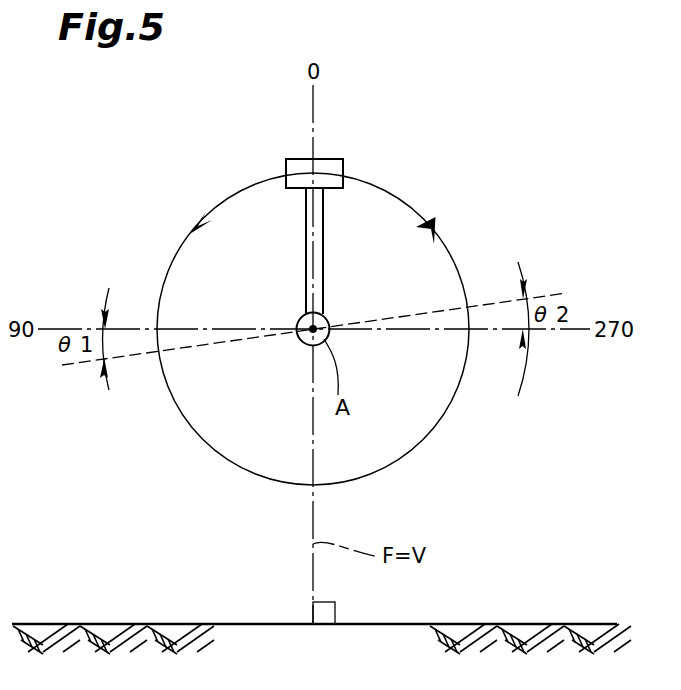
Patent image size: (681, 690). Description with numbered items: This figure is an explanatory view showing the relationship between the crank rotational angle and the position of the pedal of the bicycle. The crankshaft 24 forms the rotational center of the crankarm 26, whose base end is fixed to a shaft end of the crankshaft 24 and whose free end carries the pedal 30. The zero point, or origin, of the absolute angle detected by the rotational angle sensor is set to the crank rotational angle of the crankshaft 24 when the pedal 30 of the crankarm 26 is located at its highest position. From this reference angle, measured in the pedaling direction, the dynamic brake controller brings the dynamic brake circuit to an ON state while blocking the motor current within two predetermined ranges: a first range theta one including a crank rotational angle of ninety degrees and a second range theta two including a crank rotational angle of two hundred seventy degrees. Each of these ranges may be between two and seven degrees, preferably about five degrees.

The crankshaft 24 is at (322, 320).
The crankarm 26 is at (324, 247).
The pedal 30 is at (327, 166).